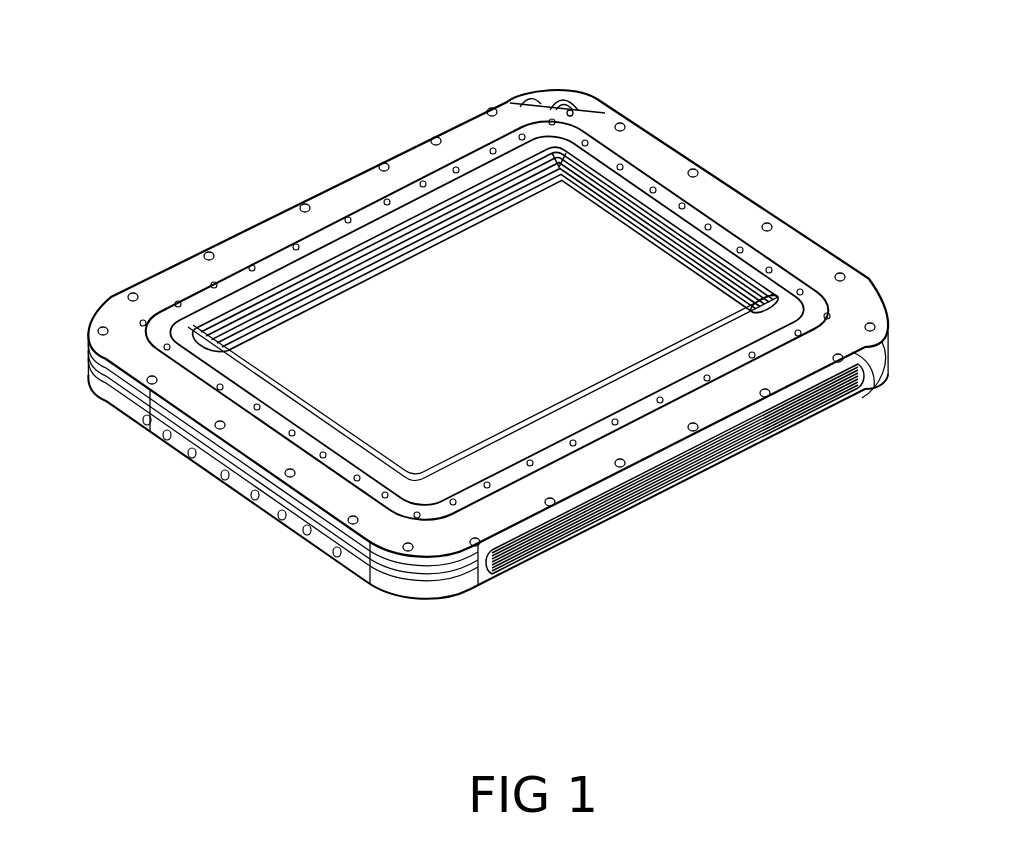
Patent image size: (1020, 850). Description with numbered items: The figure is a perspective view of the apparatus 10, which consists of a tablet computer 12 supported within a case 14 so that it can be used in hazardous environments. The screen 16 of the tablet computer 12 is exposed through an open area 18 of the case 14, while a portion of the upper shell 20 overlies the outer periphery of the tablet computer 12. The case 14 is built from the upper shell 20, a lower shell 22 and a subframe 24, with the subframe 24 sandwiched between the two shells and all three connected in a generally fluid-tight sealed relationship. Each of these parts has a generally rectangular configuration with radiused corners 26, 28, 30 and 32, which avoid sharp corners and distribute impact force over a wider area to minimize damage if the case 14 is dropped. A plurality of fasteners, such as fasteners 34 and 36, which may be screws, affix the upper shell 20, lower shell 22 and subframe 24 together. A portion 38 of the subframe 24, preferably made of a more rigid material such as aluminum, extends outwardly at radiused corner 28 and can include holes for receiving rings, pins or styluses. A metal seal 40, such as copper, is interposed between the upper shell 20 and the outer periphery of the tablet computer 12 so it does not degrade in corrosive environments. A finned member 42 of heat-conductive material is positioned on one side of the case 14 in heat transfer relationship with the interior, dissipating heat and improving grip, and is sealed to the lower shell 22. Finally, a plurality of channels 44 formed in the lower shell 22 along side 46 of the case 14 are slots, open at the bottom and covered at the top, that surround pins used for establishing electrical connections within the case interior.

The apparatus 10 is at (801, 181).
The tablet computer 12 is at (494, 359).
The case 14 is at (863, 382).
The screen 16 is at (643, 253).
The open area 18 is at (588, 182).
The upper shell 20 is at (178, 272).
The lower shell 22 is at (423, 594).
The subframe 24 is at (470, 575).
The radiused corner 26 is at (97, 330).
The radiused corner 28 is at (578, 96).
The radiused corner 30 is at (893, 333).
The radiused corner 32 is at (402, 590).
The fastener 34 is at (700, 418).
The fastener 36 is at (880, 367).
The outwardly extending portion of the subframe 38 is at (540, 95).
The seal 40 is at (413, 253).
The finned member 42 is at (706, 462).
The channels 44 is at (155, 430).
The side 46 is at (125, 400).